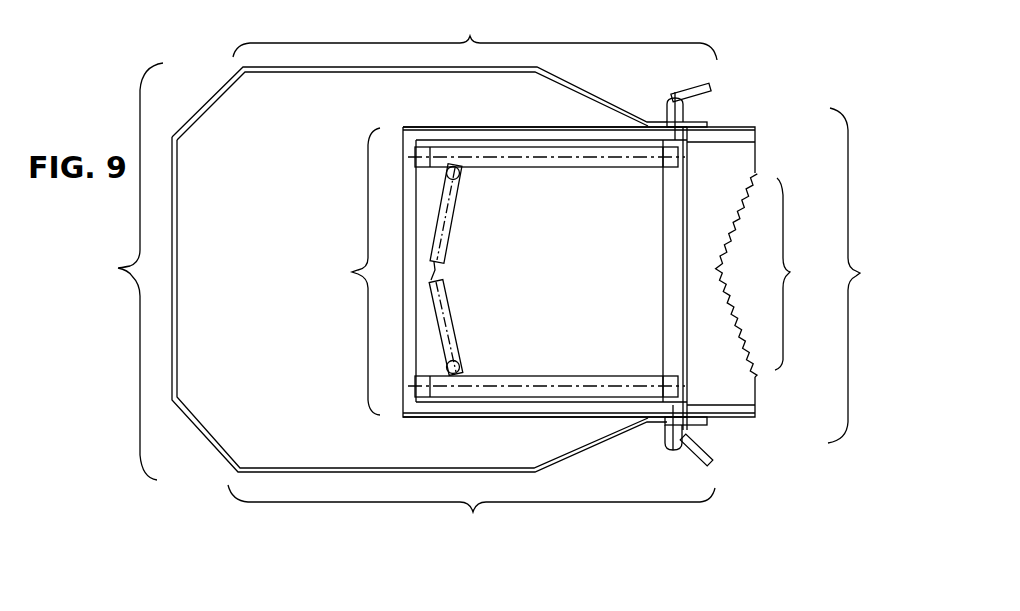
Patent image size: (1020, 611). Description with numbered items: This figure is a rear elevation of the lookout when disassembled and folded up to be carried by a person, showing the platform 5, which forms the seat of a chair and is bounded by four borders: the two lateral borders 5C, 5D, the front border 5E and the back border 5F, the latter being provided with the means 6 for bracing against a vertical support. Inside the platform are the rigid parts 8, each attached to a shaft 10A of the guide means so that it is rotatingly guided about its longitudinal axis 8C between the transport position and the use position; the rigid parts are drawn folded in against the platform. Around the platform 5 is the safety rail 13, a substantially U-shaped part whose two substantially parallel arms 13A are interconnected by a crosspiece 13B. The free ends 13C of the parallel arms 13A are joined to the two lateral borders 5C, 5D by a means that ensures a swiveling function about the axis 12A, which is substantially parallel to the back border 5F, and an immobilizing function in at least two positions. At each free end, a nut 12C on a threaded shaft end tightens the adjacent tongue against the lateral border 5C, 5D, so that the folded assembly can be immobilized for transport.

The platform 5 is at (350, 326).
The lateral border 5C is at (488, 121).
The lateral border 5D is at (470, 421).
The front border 5E is at (351, 270).
The back border 5F is at (862, 272).
The means for bracing 6 is at (792, 272).
The rigid part 8 is at (457, 210).
The axis 8C is at (562, 160).
The shaft 10A is at (630, 168).
The axis 12A is at (690, 89).
The nut 12C is at (683, 113).
The safety rail 13 is at (170, 398).
The parallel arms 13A is at (468, 36).
The crosspiece 13B is at (120, 268).
The free ends 13C is at (650, 96).